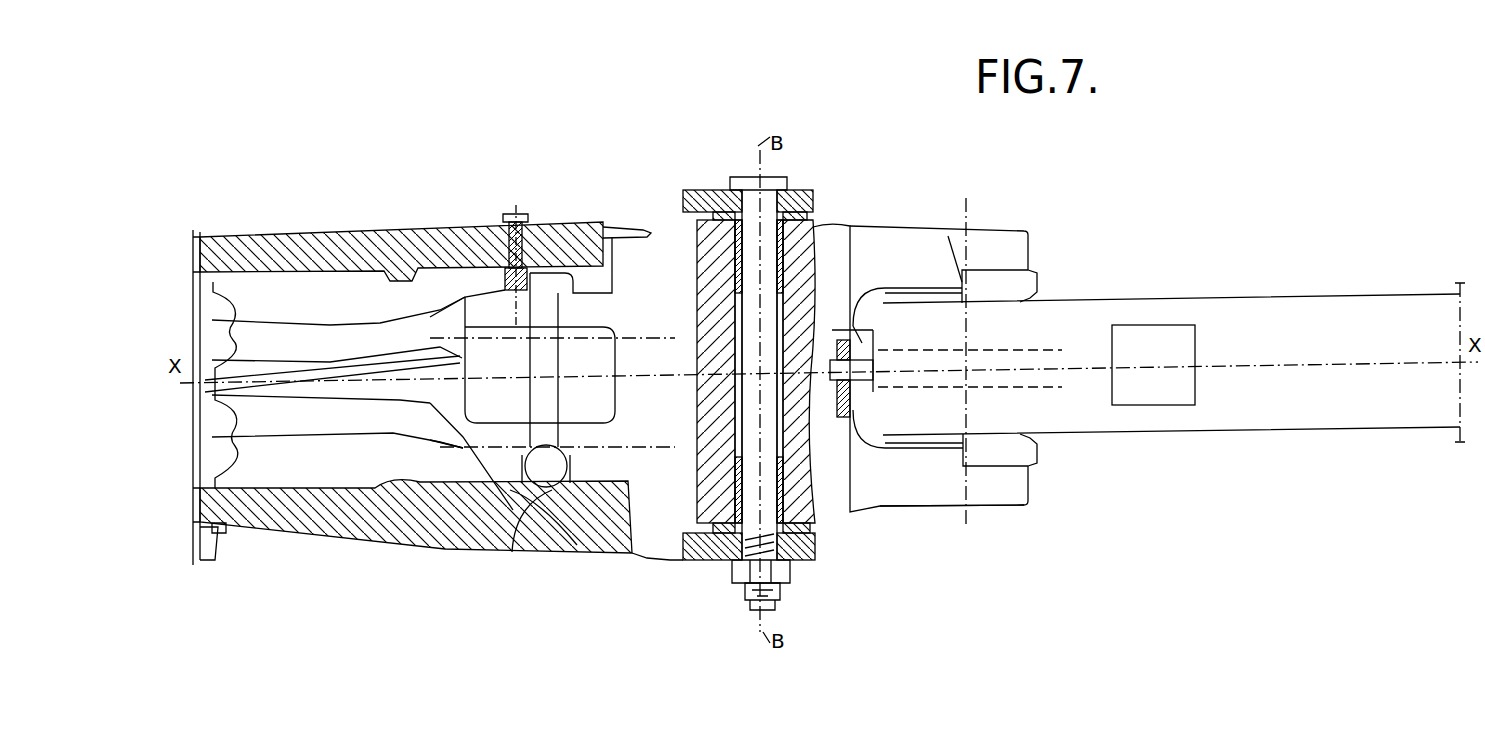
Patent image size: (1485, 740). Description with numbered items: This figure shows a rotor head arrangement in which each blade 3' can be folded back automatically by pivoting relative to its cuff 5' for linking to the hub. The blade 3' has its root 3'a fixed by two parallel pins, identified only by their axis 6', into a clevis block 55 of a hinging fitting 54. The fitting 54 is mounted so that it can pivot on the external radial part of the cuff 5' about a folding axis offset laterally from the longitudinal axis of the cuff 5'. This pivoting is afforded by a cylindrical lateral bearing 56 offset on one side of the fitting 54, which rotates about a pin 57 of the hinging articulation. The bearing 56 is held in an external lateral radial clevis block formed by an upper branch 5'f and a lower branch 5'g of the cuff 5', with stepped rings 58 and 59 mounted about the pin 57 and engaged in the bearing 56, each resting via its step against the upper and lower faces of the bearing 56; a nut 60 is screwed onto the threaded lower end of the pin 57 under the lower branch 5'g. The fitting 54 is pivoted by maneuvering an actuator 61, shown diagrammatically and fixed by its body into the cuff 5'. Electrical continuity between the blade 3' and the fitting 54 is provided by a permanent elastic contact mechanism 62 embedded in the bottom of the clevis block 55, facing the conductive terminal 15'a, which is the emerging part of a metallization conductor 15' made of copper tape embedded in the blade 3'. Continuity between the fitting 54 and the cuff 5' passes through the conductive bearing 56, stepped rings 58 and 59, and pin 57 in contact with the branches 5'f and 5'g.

The blade 3' is at (1171, 387).
The blade root 3'a is at (952, 490).
The cuff 5' is at (422, 413).
The upper branch 5'f is at (708, 188).
The lower branch 5'g is at (761, 568).
The pin axis 6' is at (985, 355).
The metallization conductor 15' is at (990, 325).
The conductive terminal 15'a is at (890, 343).
The hinging fitting 54 is at (851, 226).
The clevis block 55 is at (1020, 485).
The bearing 56 is at (807, 233).
The pin 57 is at (768, 460).
The stepped ring 58 is at (700, 273).
The stepped ring 59 is at (730, 533).
The nut 60 is at (783, 568).
The actuator 61 is at (643, 393).
The permanent elastic contact mechanism 62 is at (861, 342).